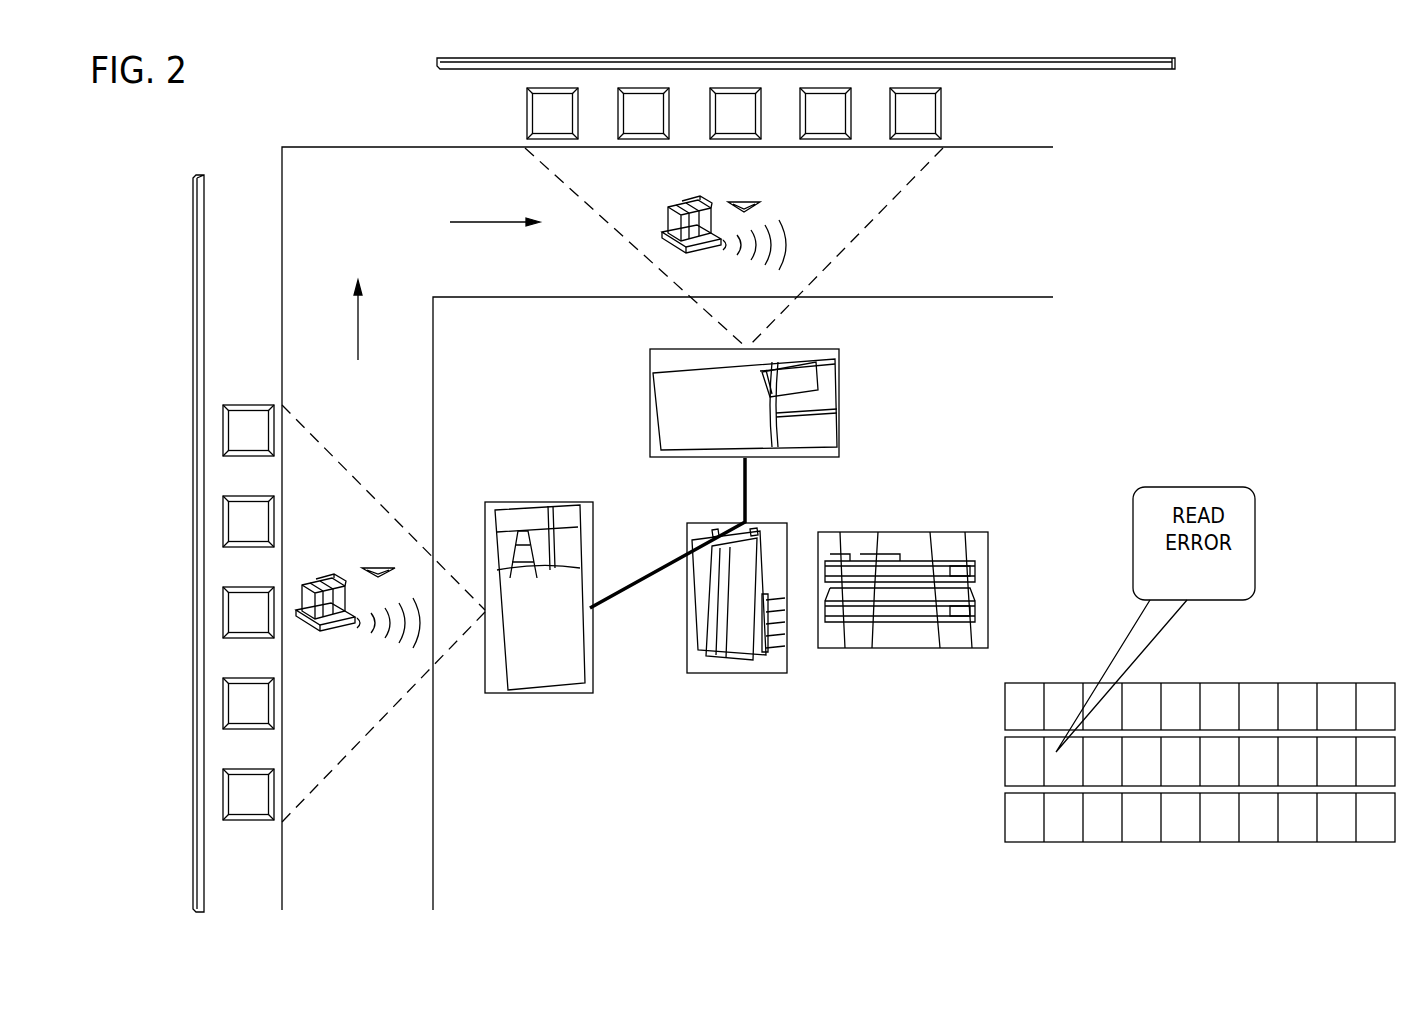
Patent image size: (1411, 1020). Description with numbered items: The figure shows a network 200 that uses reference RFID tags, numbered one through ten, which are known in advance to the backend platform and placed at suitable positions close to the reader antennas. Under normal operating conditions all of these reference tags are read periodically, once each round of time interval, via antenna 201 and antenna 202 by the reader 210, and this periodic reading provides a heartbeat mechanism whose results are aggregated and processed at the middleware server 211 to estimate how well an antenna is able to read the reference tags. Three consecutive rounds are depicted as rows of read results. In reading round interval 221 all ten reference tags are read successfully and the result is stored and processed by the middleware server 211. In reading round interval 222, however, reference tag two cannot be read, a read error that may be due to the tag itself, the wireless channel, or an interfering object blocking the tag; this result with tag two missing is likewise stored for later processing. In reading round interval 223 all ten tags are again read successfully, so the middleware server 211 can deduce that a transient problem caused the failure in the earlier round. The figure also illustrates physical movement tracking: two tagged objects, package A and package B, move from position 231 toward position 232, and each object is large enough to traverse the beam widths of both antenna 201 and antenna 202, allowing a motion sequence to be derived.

The network 200 is at (147, 129).
The antenna 201 is at (500, 502).
The antenna 202 is at (888, 418).
The reader 210 is at (730, 673).
The middleware server 211 is at (890, 517).
The reading round interval 221 is at (1004, 718).
The reading round interval 222 is at (1004, 773).
The reading round interval 223 is at (1004, 829).
The position 231 is at (317, 628).
The position 232 is at (688, 197).